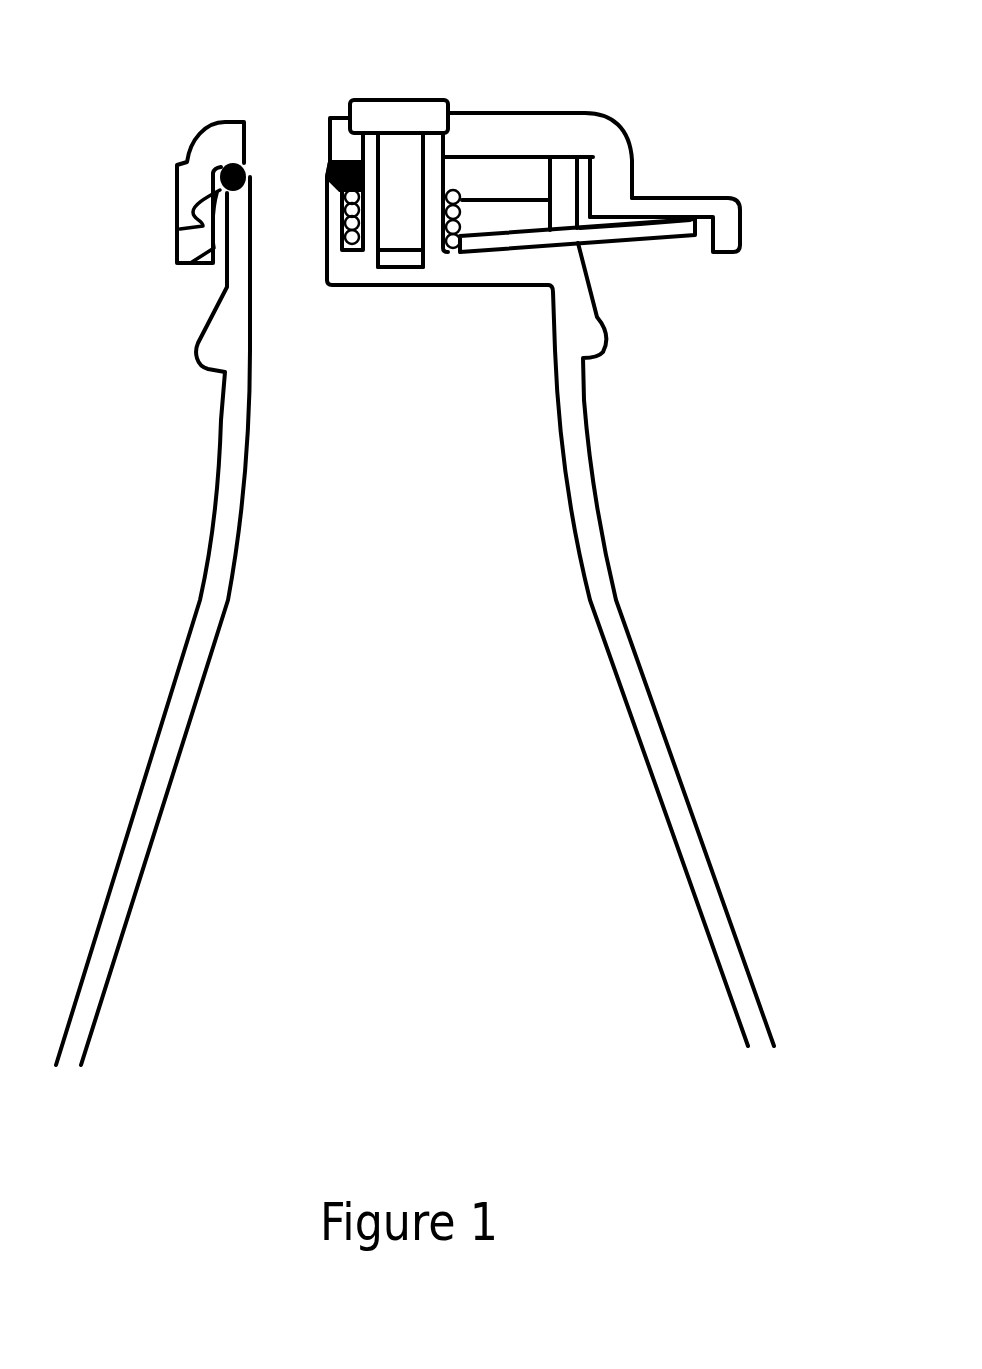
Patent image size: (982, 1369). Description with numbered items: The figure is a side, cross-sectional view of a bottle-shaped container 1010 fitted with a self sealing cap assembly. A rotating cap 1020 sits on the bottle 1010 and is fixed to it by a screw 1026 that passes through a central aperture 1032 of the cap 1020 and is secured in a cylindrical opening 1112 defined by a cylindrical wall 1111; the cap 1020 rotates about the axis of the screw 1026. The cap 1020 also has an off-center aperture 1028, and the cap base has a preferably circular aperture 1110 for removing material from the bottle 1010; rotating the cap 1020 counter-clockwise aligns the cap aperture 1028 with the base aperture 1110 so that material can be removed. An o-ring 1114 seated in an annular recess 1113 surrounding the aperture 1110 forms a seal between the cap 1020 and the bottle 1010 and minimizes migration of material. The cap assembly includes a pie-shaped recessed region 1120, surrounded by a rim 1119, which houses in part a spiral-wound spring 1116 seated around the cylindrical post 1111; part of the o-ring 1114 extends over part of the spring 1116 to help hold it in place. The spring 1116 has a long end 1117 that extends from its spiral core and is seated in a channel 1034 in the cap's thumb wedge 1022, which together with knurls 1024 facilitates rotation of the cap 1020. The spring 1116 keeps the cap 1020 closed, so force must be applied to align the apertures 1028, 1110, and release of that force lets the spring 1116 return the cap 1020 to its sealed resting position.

The bottle-shaped container 1010 is at (620, 600).
The cap 1020 is at (558, 113).
The thumb wedge 1022 is at (742, 203).
The knurls 1024 is at (175, 193).
The screw 1026 is at (388, 100).
The off-center aperture 1028 is at (285, 122).
The central aperture 1032 is at (455, 113).
The channel 1034 is at (697, 238).
The aperture 1110 is at (298, 262).
The cylindrical wall 1111 is at (427, 230).
The cylindrical opening 1112 is at (407, 268).
The annular recess 1113 is at (190, 263).
The o-ring 1114 is at (175, 232).
The spring 1116 is at (607, 242).
The long end 1117 is at (667, 240).
The rim 1119 is at (567, 182).
The recessed region 1120 is at (518, 201).